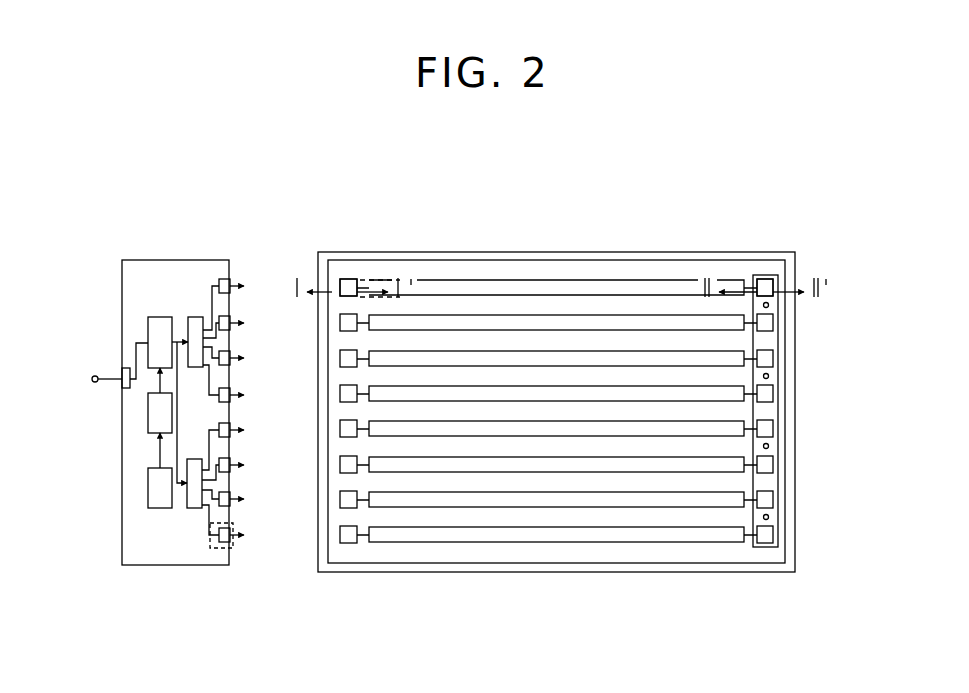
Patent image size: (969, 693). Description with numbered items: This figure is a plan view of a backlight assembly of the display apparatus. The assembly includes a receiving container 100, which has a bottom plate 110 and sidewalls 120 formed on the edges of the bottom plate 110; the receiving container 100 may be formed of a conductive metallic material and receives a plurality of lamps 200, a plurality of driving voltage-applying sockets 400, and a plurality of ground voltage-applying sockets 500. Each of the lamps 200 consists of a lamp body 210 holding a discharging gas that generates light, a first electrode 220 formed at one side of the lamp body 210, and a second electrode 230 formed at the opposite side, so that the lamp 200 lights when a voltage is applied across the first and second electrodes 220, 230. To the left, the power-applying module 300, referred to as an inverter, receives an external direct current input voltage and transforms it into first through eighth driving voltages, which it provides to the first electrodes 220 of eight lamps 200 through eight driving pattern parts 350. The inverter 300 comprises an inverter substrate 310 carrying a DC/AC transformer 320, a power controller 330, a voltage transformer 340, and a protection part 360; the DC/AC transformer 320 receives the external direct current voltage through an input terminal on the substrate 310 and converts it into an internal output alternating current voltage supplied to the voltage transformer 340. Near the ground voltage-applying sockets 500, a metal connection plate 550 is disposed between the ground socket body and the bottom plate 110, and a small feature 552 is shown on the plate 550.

The receiving container 100 is at (556, 373).
The bottom plate 110 is at (531, 270).
The sidewalls 120 is at (486, 254).
The lamps 200 is at (636, 276).
The lamp body 210 is at (483, 536).
The first electrode 220 is at (360, 541).
The second electrode 230 is at (748, 541).
The power-applying module 300 is at (133, 258).
The substrate 310 is at (175, 268).
The DC/AC transformer 320 is at (160, 316).
The power controller 330 is at (148, 410).
The voltage transformer 340 is at (196, 319).
The driving pattern parts 350 is at (224, 278).
The protection part 360 is at (148, 486).
The driving voltage-applying sockets 400 is at (347, 277).
The ground voltage-applying sockets 500 is at (763, 276).
The metal connection plate 550 is at (778, 337).
The contact hole 552 is at (769, 376).